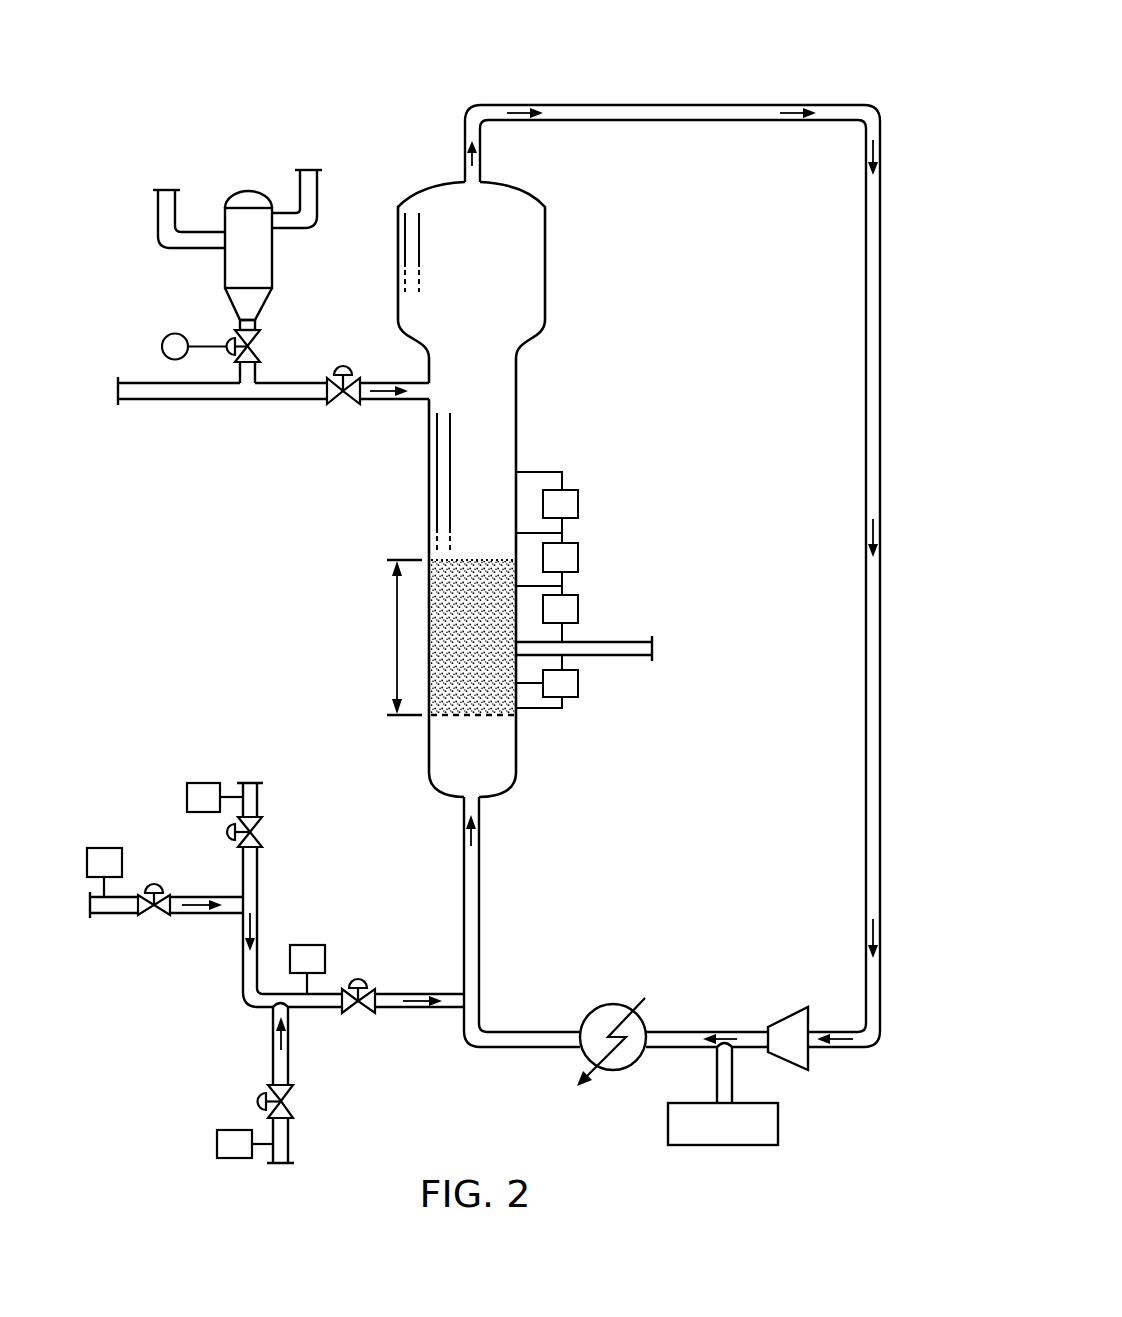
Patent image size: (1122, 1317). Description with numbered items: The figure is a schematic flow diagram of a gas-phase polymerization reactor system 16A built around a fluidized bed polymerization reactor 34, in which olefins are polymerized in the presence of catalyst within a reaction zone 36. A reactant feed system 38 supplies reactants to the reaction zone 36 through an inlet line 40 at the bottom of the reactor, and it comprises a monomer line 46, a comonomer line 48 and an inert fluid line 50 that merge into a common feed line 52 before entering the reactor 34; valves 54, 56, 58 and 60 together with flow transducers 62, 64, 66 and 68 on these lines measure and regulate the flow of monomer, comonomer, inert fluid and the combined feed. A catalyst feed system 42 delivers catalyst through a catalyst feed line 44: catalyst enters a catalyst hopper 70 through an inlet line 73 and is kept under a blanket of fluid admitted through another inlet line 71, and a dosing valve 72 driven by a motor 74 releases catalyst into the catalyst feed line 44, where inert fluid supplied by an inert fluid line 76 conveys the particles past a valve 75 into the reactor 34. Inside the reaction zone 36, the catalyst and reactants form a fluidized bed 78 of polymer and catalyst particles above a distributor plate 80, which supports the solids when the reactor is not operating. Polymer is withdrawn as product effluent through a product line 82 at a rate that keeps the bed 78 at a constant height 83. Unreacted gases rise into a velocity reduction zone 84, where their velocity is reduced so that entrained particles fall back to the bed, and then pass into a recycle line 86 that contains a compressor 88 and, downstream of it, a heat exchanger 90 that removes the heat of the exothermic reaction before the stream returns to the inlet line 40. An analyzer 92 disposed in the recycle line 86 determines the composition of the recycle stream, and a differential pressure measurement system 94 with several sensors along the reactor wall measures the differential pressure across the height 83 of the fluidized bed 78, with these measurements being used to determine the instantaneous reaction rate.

The reactor system 16A is at (706, 42).
The fluidized bed polymerization reactor 34 is at (524, 458).
The reaction zone 36 is at (430, 517).
The reactant feed system 38 is at (167, 1048).
The inlet line 40 is at (479, 897).
The catalyst feed system 42 is at (174, 278).
The catalyst feed line 44 is at (268, 401).
The monomer line 46 is at (260, 885).
The comonomer line 48 is at (192, 898).
The inert fluid line 50 is at (273, 1038).
The feed line 52 is at (404, 994).
The valve 54 is at (262, 841).
The valve 56 is at (145, 917).
The valve 58 is at (290, 1111).
The valve 60 is at (364, 981).
The flow transducer 62 is at (202, 783).
The flow transducer 64 is at (107, 848).
The flow transducer 66 is at (231, 1130).
The flow transducer 68 is at (308, 945).
The catalyst hopper 70 is at (226, 220).
The inlet line 71 is at (318, 191).
The valve 72 is at (259, 356).
The inlet line 73 is at (157, 208).
The motor 74 is at (166, 337).
The valve 75 is at (357, 405).
The inert fluid line 76 is at (138, 401).
The fluidized bed 78 is at (445, 570).
The distributor plate 80 is at (447, 718).
The product line 82 is at (626, 642).
The height 83 is at (397, 630).
The velocity reduction zone 84 is at (546, 267).
The recycle line 86 is at (866, 844).
The compressor 88 is at (789, 1016).
The heat exchanger 90 is at (606, 1004).
The analyzer 92 is at (753, 1103).
The differential pressure measurement system 94 is at (588, 530).